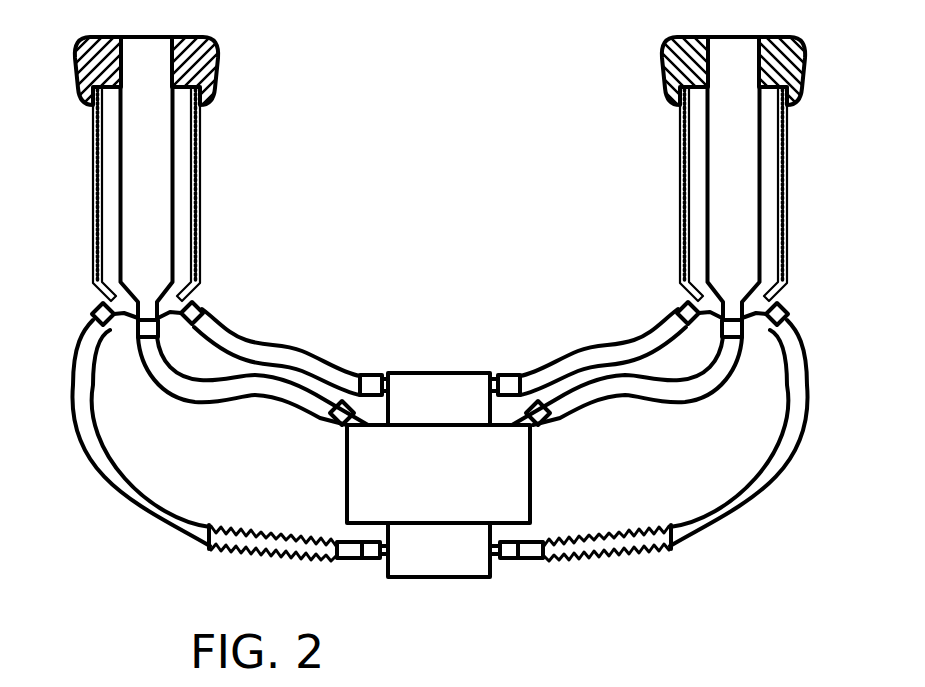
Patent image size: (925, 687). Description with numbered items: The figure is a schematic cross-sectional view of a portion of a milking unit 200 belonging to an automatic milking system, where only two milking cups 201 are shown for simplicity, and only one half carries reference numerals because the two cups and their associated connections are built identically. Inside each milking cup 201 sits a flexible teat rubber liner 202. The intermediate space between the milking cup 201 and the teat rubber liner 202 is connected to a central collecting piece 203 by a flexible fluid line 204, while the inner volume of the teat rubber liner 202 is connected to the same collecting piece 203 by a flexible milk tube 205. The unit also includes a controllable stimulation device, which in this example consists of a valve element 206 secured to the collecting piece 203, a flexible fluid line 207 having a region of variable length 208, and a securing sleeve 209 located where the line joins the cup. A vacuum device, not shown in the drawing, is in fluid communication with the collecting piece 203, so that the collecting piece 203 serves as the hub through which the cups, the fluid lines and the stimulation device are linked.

The milking unit 200 is at (442, 320).
The milking cup 201 is at (202, 132).
The teat rubber liner 202 is at (184, 184).
The collecting piece 203 is at (433, 445).
The flexible fluid line 204 is at (290, 352).
The flexible milk tube 205 is at (251, 395).
The valve element 206 is at (438, 560).
The flexible fluid line 207 is at (160, 515).
The region of variable length 208 is at (273, 547).
The securing sleeve 209 is at (98, 308).